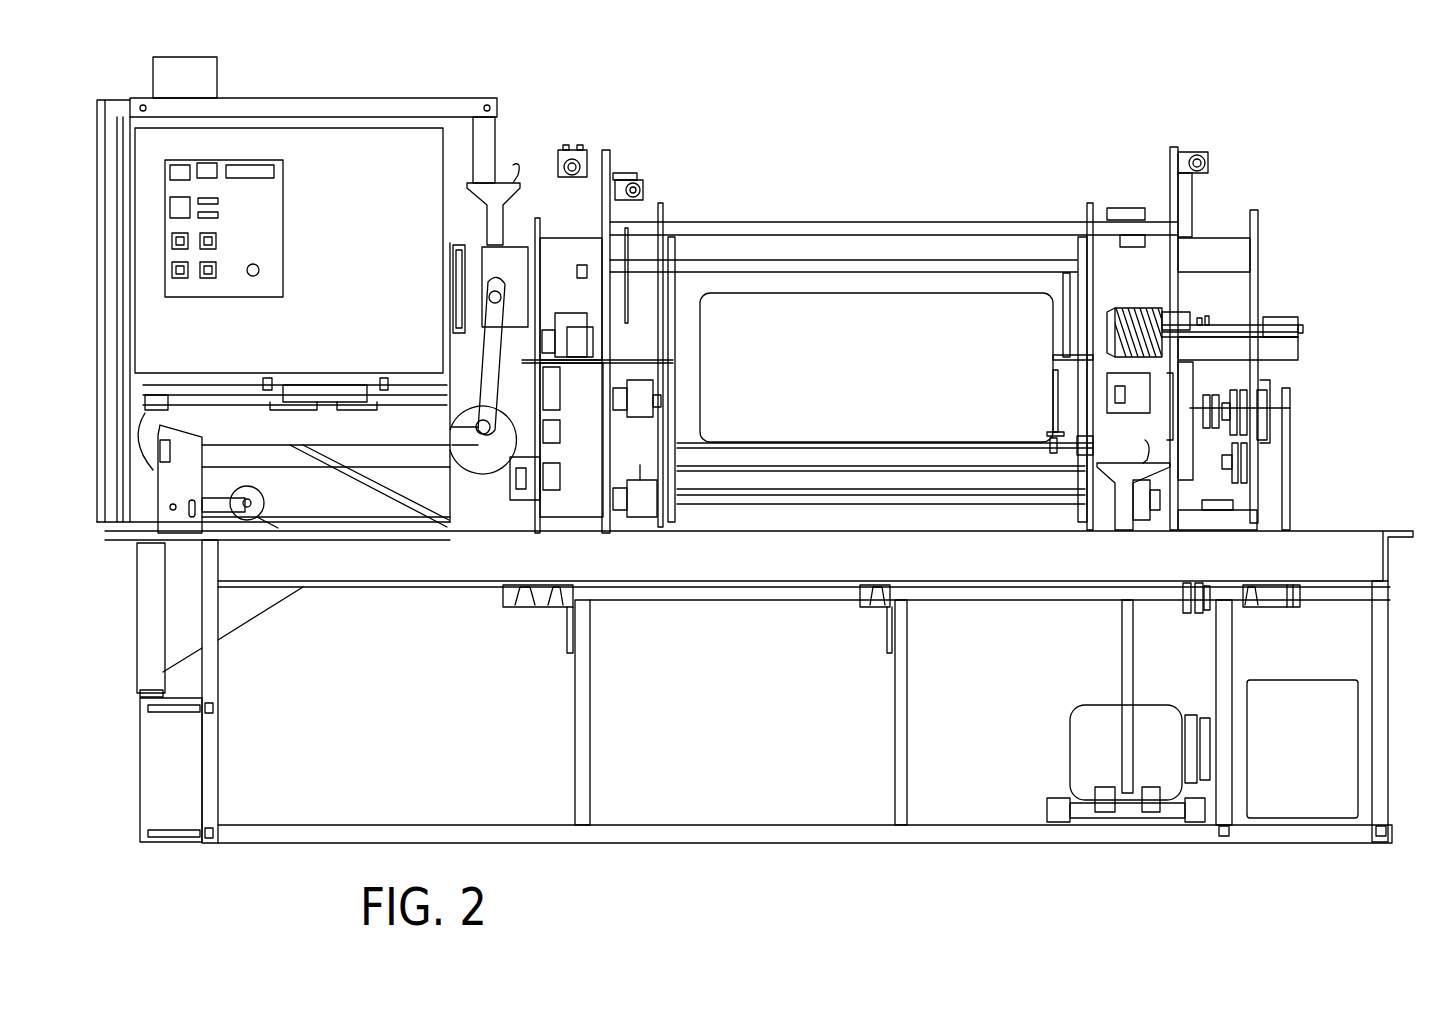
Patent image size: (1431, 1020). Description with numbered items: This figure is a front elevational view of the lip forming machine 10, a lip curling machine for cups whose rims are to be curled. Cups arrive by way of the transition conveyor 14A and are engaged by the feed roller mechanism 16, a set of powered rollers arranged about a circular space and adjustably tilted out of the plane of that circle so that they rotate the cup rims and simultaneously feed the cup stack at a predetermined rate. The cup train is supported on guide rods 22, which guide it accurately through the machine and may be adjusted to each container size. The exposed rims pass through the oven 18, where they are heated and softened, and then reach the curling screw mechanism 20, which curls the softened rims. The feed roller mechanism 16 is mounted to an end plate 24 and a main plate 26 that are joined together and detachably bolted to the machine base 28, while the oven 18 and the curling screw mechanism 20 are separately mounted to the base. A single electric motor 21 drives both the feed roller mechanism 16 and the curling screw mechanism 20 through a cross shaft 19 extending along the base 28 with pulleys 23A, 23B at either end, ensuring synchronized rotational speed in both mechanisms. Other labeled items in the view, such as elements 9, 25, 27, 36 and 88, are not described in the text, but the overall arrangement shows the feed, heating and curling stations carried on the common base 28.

The motor end cap 9 is at (1123, 307).
The lip forming machine 10 is at (938, 138).
The transition conveyor 14A is at (321, 369).
The feed roller mechanism 16 is at (583, 106).
The oven 18 is at (970, 394).
The cross shaft 19 is at (958, 602).
The curling screw mechanism 20 is at (1224, 189).
The electric motor 21 is at (1082, 705).
The guide rods 22 is at (1058, 354).
The pulley 23A is at (528, 600).
The pulley 23B is at (1302, 600).
The end plate 24 is at (1260, 222).
The control cabinet 25 is at (325, 121).
The main plate 26 is at (1166, 186).
The electrical box 27 is at (1270, 690).
The machine base 28 is at (1319, 528).
The drive motor 36 is at (1142, 299).
The pulley assembly 88 is at (1290, 400).